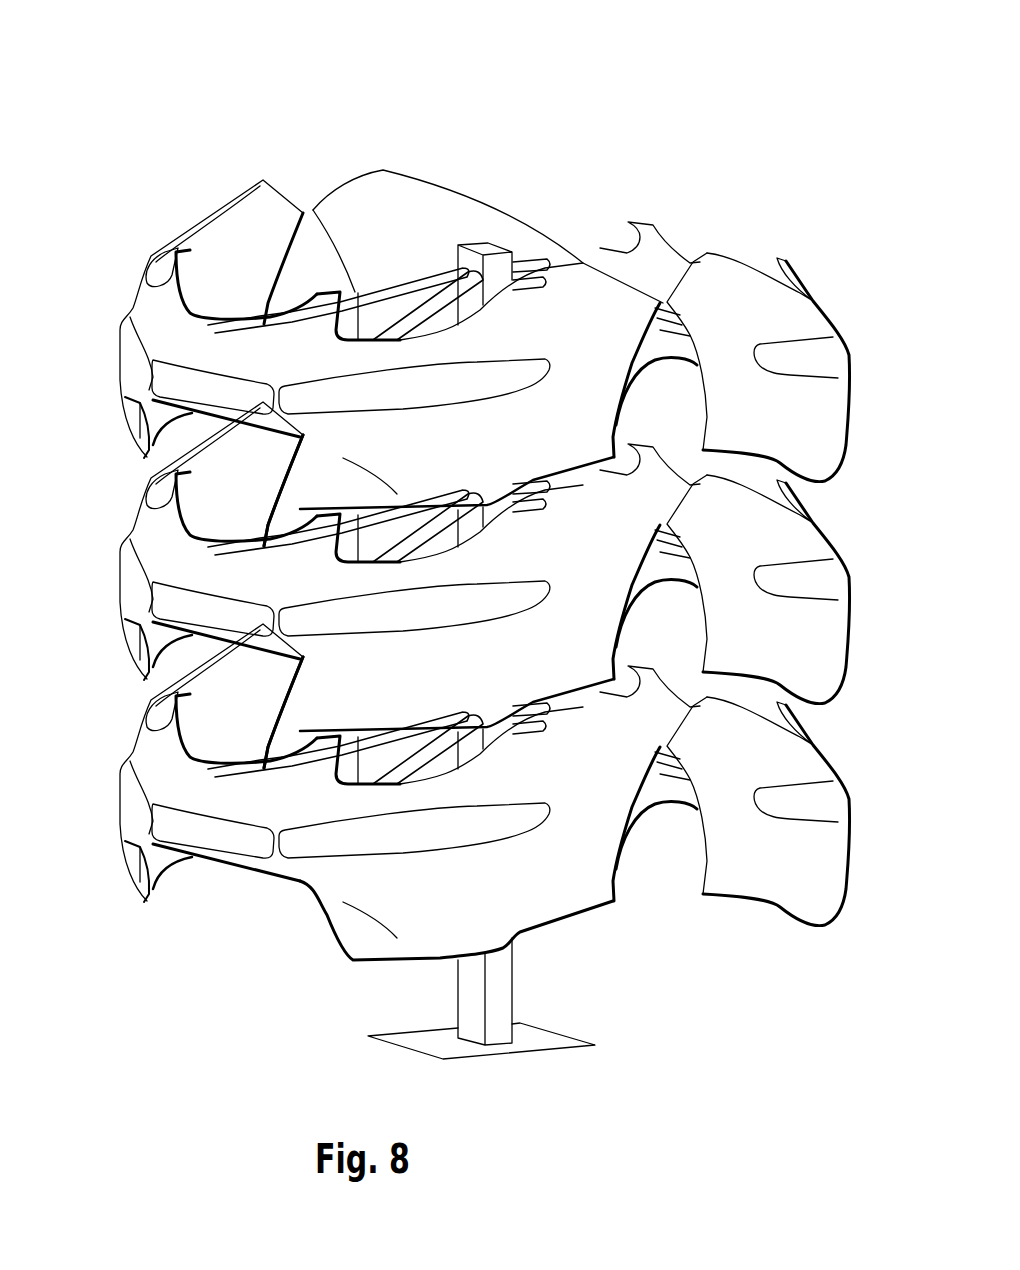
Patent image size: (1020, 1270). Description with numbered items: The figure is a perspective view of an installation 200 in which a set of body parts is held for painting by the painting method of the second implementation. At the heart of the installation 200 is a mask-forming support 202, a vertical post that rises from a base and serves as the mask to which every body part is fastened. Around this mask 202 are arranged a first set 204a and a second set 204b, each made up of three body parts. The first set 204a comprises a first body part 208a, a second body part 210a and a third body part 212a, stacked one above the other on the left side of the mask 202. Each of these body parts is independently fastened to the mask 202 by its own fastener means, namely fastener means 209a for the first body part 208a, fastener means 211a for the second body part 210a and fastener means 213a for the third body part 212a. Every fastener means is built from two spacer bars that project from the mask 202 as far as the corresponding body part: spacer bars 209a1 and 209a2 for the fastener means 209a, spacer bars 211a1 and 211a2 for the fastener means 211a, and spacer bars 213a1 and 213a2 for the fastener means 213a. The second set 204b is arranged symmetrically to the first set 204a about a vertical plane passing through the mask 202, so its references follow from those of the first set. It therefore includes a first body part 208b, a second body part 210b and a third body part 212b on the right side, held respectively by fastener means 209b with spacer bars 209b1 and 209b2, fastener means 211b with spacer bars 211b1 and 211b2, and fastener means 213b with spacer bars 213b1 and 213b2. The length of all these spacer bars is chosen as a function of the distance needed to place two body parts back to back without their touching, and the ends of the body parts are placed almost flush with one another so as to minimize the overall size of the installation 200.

The installation 200 is at (475, 568).
The mask-forming support 202 is at (498, 1023).
The first set 204a is at (231, 170).
The second set 204b is at (683, 201).
The first body part 208a is at (95, 354).
The first body part 208b is at (833, 280).
The fastener means 209a is at (396, 254).
The spacer bar 209a1 is at (257, 318).
The spacer bar 209a2 is at (433, 290).
The fastener means 209b is at (532, 240).
The spacer bar 209b1 is at (498, 262).
The spacer bar 209b2 is at (547, 263).
The second body part 210a is at (95, 576).
The second body part 210b is at (860, 590).
The fastener means 211a is at (303, 496).
The spacer bar 211a1 is at (252, 540).
The spacer bar 211a2 is at (468, 505).
The fastener means 211b is at (557, 514).
The spacer bar 211b1 is at (537, 484).
The spacer bar 211b2 is at (690, 553).
The third body part 212a is at (95, 796).
The third body part 212b is at (783, 955).
The fastener means 213a is at (303, 718).
The spacer bar 213a1 is at (252, 762).
The spacer bar 213a2 is at (468, 727).
The fastener means 213b is at (557, 736).
The spacer bar 213b1 is at (537, 707).
The spacer bar 213b2 is at (668, 763).